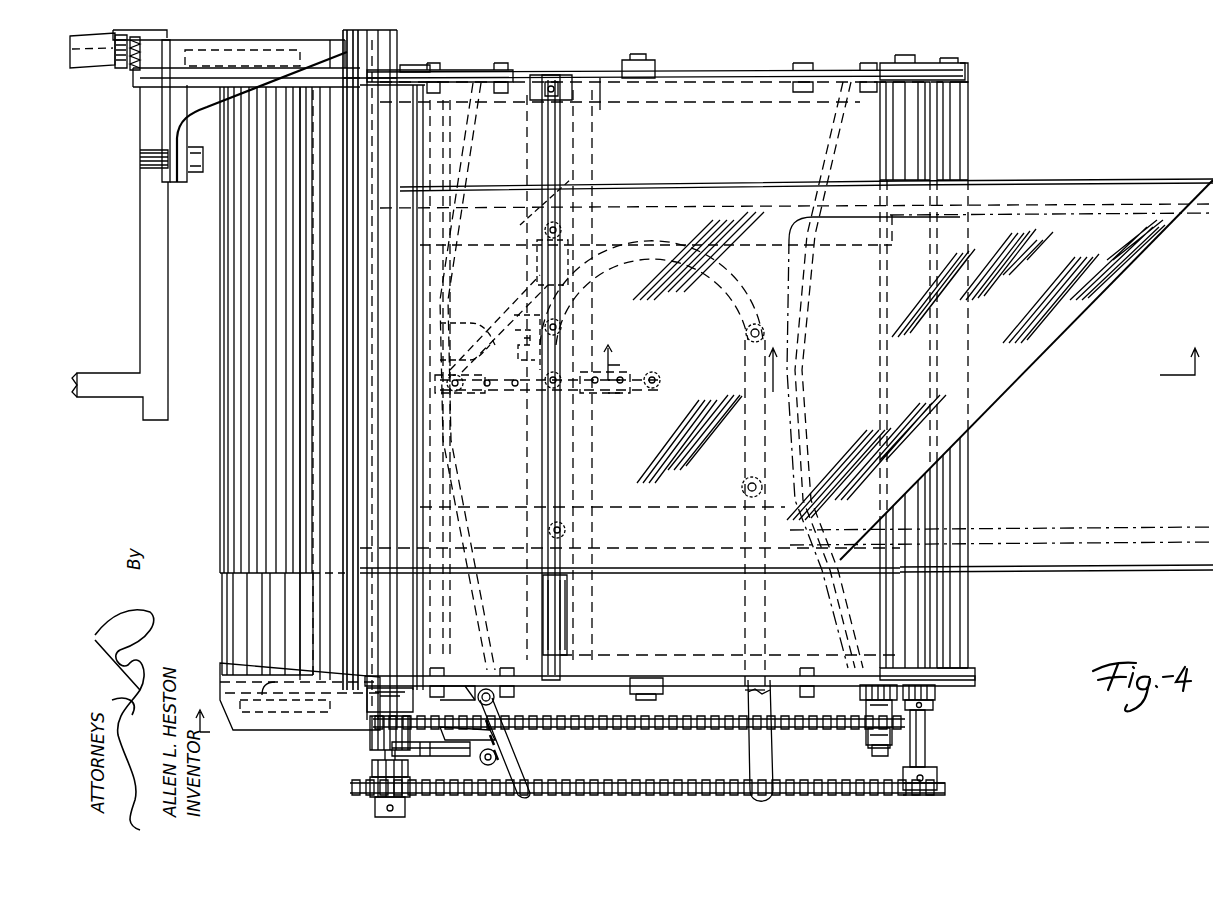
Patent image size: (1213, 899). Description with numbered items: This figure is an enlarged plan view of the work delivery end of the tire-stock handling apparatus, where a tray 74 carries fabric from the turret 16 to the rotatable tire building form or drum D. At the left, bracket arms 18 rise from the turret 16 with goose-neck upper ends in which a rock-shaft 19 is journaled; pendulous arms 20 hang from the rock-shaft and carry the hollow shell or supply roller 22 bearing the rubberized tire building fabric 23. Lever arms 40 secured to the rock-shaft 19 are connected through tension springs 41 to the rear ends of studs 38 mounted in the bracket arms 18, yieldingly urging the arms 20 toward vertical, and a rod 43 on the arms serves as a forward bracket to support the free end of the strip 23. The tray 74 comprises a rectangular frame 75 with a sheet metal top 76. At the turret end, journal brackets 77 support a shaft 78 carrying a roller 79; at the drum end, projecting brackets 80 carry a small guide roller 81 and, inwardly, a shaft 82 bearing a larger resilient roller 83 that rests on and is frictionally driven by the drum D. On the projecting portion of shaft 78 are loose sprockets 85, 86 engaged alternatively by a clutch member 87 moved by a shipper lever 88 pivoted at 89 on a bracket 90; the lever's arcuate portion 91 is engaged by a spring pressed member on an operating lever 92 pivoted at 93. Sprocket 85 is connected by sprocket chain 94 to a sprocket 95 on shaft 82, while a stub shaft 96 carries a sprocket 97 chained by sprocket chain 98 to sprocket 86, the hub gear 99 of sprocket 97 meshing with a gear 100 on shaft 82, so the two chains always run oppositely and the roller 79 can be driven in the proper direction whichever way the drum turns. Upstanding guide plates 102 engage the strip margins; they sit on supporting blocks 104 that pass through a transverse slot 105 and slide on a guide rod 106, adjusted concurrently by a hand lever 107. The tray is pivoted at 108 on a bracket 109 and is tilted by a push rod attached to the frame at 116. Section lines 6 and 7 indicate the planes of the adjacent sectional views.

The turntable or turret 16 is at (140, 292).
The bracket arms 18 is at (205, 100).
The rock-shaft 19 is at (332, 118).
The pendulous arms 20 is at (362, 47).
The hollow shell or supply roller 22 is at (222, 585).
The rubberized tire building fabric 23 is at (1072, 320).
The stud 38 is at (240, 60).
The lever arms 40 is at (113, 50).
The tension springs 41 is at (128, 70).
The rod 43 is at (420, 68).
The tray 74 is at (703, 68).
The rectangular frame 75 is at (760, 103).
The sheet metal top 76 is at (598, 78).
The journal brackets 77 is at (464, 72).
The shaft 78 is at (400, 65).
The roller 79 is at (340, 205).
The projecting brackets 80 is at (840, 68).
The guide roller 81 is at (970, 610).
The shaft 82 is at (928, 740).
The roller 83 is at (932, 640).
The sprocket 85 is at (373, 800).
The sprocket 86 is at (368, 740).
The clutch member 87 is at (372, 768).
The shipper lever 88 is at (445, 758).
The pivot 89 is at (485, 765).
The bracket 90 is at (470, 700).
The arcuate portion 91 is at (478, 740).
The operating lever 92 is at (520, 768).
The pivot 93 is at (496, 700).
The sprocket chain 94 is at (670, 782).
The sprocket 95 is at (940, 772).
The stub shaft 96 is at (875, 752).
The sprocket 97 is at (868, 740).
The sprocket chain 98 is at (655, 730).
The gear 99 is at (860, 712).
The gear 100 is at (938, 697).
The guide plates 102 is at (740, 185).
The supporting blocks 104 is at (525, 187).
The slot 105 is at (566, 148).
The guide rod 106 is at (562, 622).
The hand lever 107 is at (770, 800).
The pivot 108 is at (640, 697).
The bracket 109 is at (645, 60).
The pivotal connection 116 is at (500, 315).
The section line 6 is at (870, 465).
The section line 7 is at (411, 533).
The tire building form or drum D is at (1165, 555).